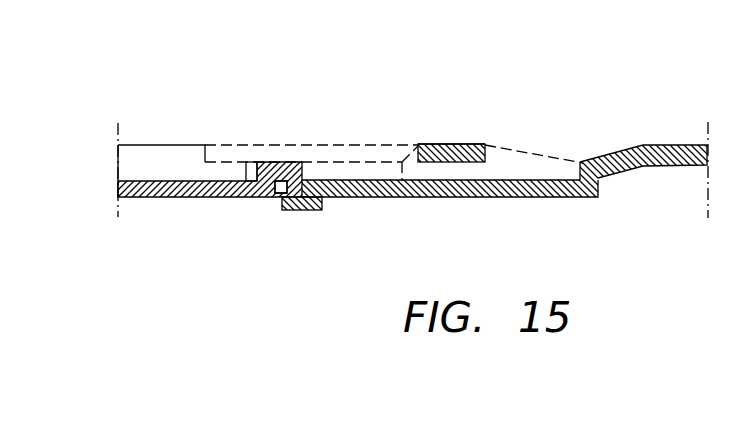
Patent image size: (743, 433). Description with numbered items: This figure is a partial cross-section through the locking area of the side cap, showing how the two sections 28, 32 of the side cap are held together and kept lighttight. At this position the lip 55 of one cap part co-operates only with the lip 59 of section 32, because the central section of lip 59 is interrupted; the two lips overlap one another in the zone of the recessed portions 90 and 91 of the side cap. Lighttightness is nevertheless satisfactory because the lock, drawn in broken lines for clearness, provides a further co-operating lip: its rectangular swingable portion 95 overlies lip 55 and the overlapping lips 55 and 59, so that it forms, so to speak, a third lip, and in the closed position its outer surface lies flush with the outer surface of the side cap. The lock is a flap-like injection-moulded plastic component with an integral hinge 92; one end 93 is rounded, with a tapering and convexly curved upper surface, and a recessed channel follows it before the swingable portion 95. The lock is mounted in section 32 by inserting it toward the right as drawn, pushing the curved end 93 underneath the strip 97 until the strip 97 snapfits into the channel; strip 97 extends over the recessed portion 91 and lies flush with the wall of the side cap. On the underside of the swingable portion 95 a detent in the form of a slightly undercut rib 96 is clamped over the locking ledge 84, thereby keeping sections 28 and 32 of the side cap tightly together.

The section of side cap 28 is at (155, 163).
The section of side cap 32 is at (670, 147).
The lip 55 is at (258, 198).
The lip 59 is at (290, 210).
The locking ledge 84 is at (288, 163).
The recessed portion 90 is at (177, 198).
The recessed portion 91 is at (505, 182).
The integral hinge 92 is at (422, 146).
The end of the lock 93 is at (563, 162).
The swingable portion 95 is at (351, 147).
The undercut rib 96 is at (249, 165).
The strip 97 is at (475, 146).